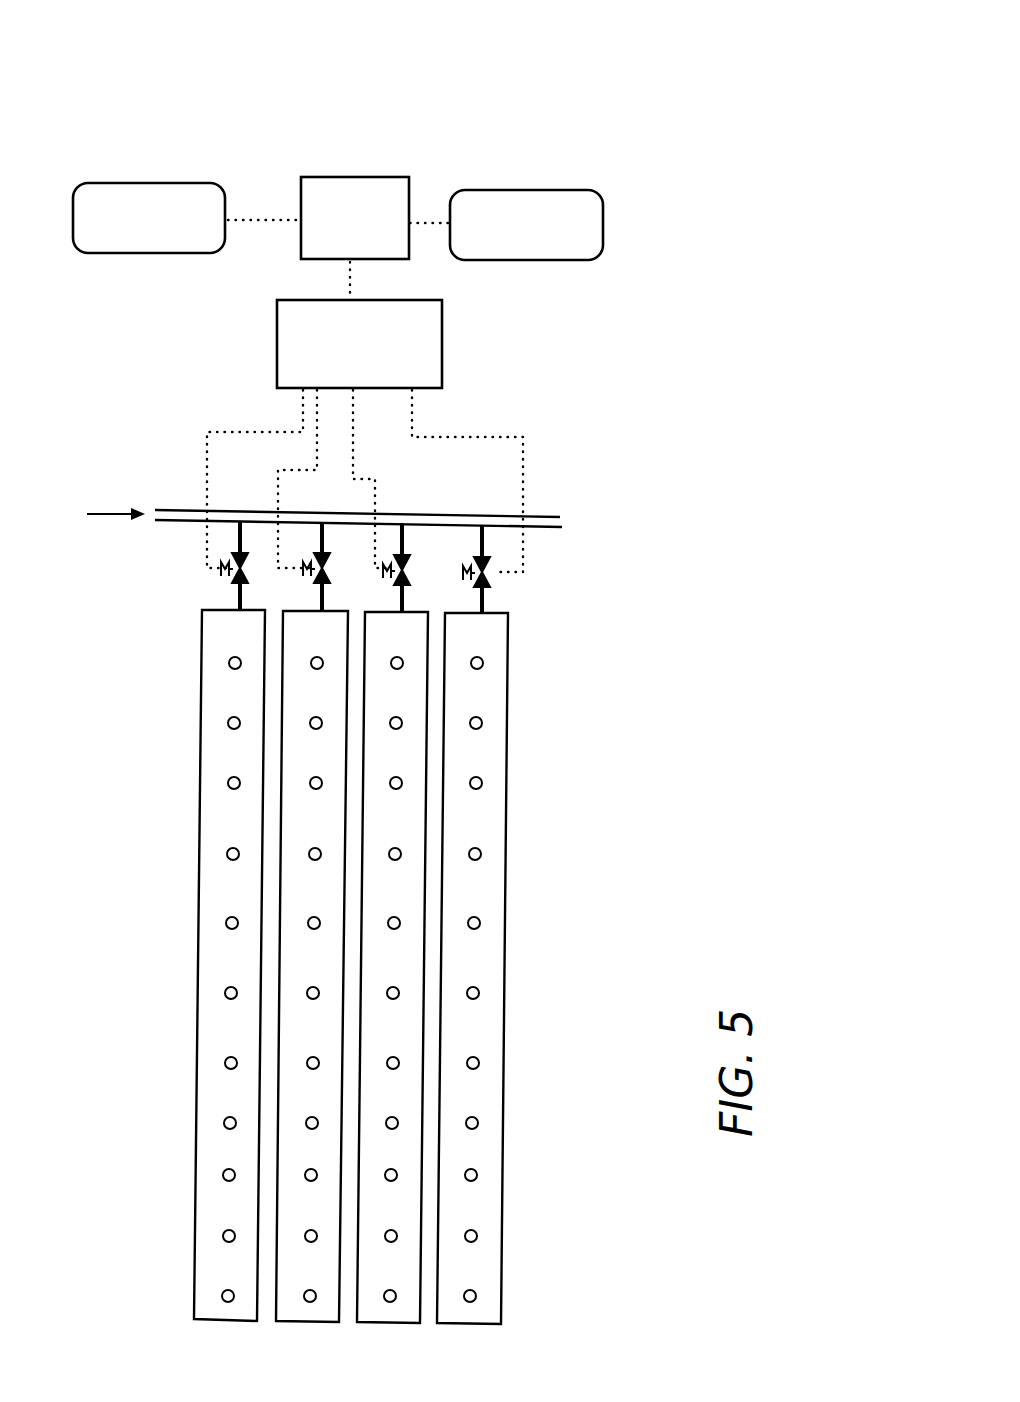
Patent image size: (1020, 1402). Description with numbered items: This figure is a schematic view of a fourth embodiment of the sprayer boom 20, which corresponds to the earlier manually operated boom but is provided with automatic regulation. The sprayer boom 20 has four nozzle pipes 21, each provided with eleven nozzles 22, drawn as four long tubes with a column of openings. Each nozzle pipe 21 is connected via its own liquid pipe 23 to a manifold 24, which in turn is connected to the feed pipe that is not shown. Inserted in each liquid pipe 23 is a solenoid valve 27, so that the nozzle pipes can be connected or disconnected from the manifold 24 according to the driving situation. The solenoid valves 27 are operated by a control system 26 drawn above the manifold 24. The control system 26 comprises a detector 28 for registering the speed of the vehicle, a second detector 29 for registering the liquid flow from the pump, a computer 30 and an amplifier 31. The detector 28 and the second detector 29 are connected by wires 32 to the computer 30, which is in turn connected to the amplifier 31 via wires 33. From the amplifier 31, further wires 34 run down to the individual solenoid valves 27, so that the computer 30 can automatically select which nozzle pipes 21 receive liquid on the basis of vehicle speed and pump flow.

The sprayer boom 20 is at (280, 967).
The nozzle pipe 21 is at (200, 903).
The nozzle 22 is at (226, 998).
The liquid pipe 23 is at (485, 597).
The manifold 24 is at (545, 515).
The control system 26 is at (535, 122).
The solenoid valve 27 is at (491, 584).
The detector 28 is at (153, 238).
The second detector 29 is at (543, 245).
The computer 30 is at (365, 242).
The amplifier 31 is at (365, 360).
The wires 32 is at (252, 217).
The wires 33 is at (350, 273).
The wires 34 is at (207, 457).